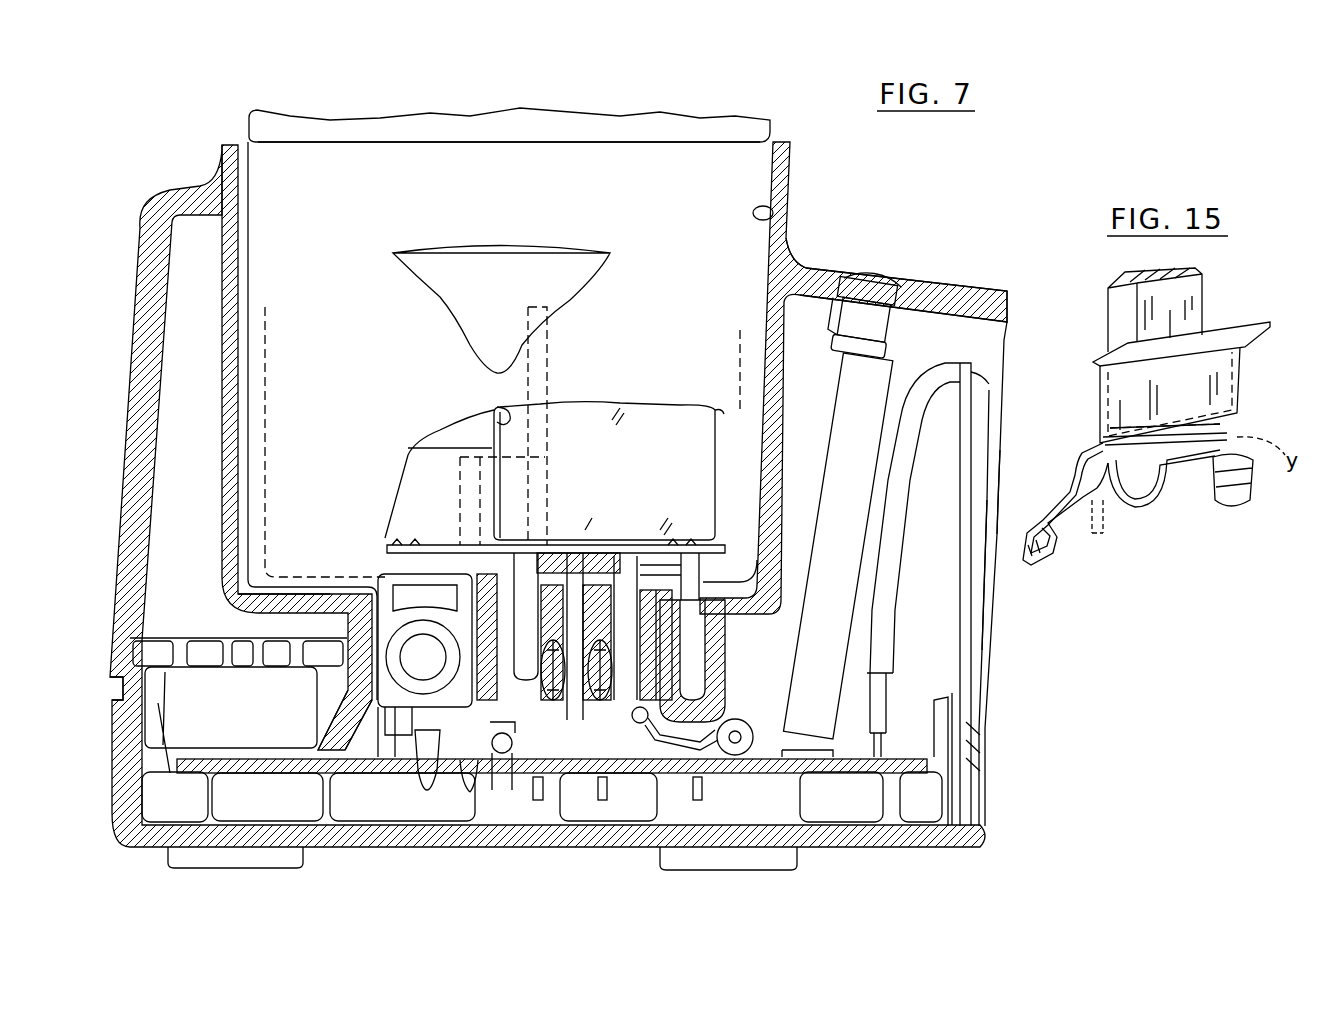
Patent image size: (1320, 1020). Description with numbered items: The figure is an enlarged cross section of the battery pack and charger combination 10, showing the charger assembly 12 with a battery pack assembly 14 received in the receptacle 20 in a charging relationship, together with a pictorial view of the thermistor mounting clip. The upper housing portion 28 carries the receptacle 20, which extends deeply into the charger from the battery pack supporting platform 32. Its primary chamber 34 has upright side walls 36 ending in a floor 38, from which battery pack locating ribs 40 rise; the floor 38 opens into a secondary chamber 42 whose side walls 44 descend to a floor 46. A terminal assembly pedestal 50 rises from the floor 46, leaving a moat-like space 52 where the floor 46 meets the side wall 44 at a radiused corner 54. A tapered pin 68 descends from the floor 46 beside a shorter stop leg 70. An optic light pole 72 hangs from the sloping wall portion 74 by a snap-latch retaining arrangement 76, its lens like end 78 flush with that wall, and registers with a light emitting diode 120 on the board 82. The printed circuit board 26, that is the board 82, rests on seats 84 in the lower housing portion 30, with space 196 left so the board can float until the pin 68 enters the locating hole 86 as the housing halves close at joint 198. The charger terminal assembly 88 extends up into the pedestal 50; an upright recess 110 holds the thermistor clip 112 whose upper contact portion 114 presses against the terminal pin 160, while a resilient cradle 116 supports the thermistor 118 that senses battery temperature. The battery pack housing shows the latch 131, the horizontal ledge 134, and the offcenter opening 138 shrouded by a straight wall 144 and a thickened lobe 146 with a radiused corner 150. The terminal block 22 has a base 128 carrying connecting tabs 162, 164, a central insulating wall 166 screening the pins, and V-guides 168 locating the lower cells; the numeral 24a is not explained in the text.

In FIG. 7, the battery pack and charger combination 10 is at (904, 187).
In FIG. 7, the charger assembly 12 is at (944, 216).
In FIG. 7, the battery pack assembly 14 is at (597, 100).
In FIG. 7, the receptacle 20 is at (238, 138).
In FIG. 7, the terminal block 22 is at (610, 527).
In FIG. 7, the pan edge 24a is at (504, 410).
In FIG. 7, the printed circuit board 26 is at (284, 740).
In FIG. 7, the upper housing portion 28 is at (132, 246).
In FIG. 7, the lower housing portion 30 is at (110, 822).
In FIG. 7, the battery pack supporting platform 32 is at (791, 141).
In FIG. 7, the primary chamber 34 is at (775, 140).
In FIG. 7, the side walls 36 is at (774, 212).
In FIG. 7, the floor 38 is at (262, 585).
In FIG. 7, the battery pack locating ribs 40 is at (552, 346).
In FIG. 7, the secondary chamber 42 is at (368, 598).
In FIG. 7, the side walls 44 is at (380, 580).
In FIG. 7, the floor 46 is at (496, 770).
In FIG. 7, the terminal assembly pedestal 50 is at (468, 608).
In FIG. 7, the moat space 52 is at (398, 722).
In FIG. 7, the radiused corner 54 is at (368, 708).
In FIG. 7, the tapered pin 68 is at (436, 789).
In FIG. 7, the stop leg 70 is at (413, 720).
In FIG. 7, the optic light pole 72 is at (826, 432).
In FIG. 7, the sloping wall portion 74 is at (988, 294).
In FIG. 7, the snap-latch retaining arrangement 76 is at (906, 322).
In FIG. 7, the lens like end 78 is at (890, 276).
In FIG. 7, the board 82 is at (243, 759).
In FIG. 7, the seats 84 is at (202, 769).
In FIG. 7, the locating hole 86 is at (462, 795).
In FIG. 7, the charger terminal assembly 88 is at (580, 748).
In FIG. 7, the upright recess 110 is at (641, 725).
In FIG. 7, the thermistor clip 112 is at (648, 724).
In FIG. 15, the thermistor clip 112 is at (1256, 405).
In FIG. 15, the upper contact portion 114 is at (1244, 377).
In FIG. 15, the resilient cradle 116 is at (1190, 500).
In FIG. 7, the thermistor 118 is at (652, 696).
In FIG. 15, the thermistor 118 is at (1123, 507).
In FIG. 7, the light emitting diode 120 is at (840, 758).
In FIG. 7, the terminal block base 128 is at (566, 545).
In FIG. 7, the latch 131 is at (442, 301).
In FIG. 7, the horizontal ledge 134 is at (638, 146).
In FIG. 7, the offcenter opening 138 is at (478, 584).
In FIG. 7, the straight wall 144 is at (773, 560).
In FIG. 7, the thickened lobe 146 is at (440, 669).
In FIG. 7, the radiused corner 150 is at (353, 672).
In FIG. 15, the terminal pin 160 is at (1203, 313).
In FIG. 7, the connecting tab 162 is at (378, 575).
In FIG. 7, the connecting tab 164 is at (702, 546).
In FIG. 7, the insulating wall 166 is at (577, 762).
In FIG. 7, the V-guides 168 is at (456, 468).
In FIG. 7, the space 196 is at (170, 750).
In FIG. 7, the joint 198 is at (122, 676).